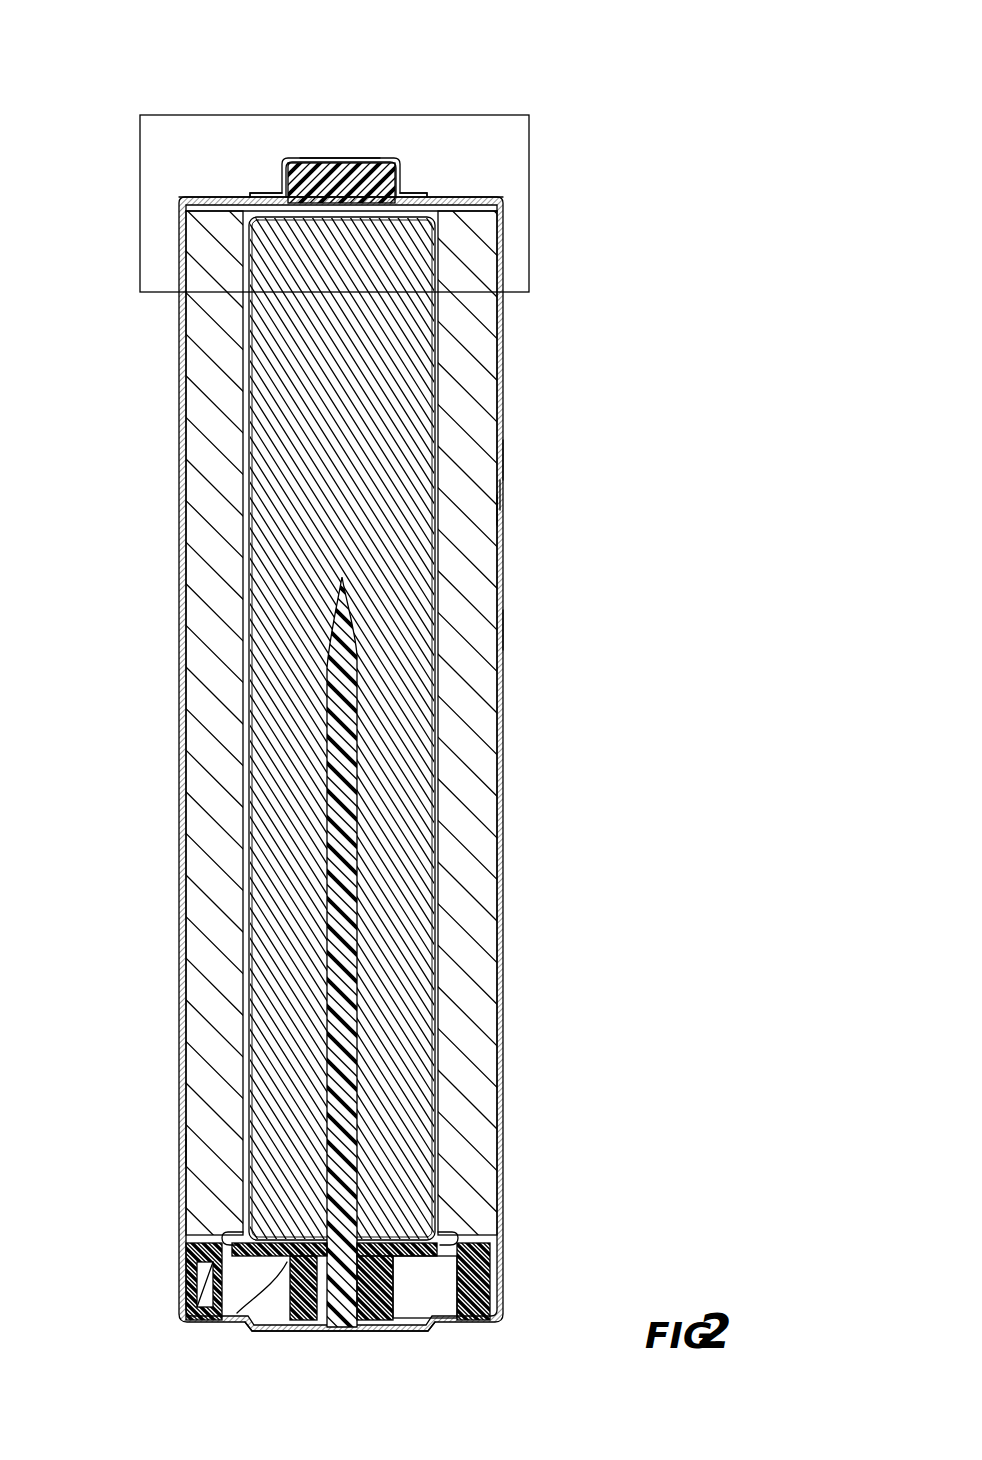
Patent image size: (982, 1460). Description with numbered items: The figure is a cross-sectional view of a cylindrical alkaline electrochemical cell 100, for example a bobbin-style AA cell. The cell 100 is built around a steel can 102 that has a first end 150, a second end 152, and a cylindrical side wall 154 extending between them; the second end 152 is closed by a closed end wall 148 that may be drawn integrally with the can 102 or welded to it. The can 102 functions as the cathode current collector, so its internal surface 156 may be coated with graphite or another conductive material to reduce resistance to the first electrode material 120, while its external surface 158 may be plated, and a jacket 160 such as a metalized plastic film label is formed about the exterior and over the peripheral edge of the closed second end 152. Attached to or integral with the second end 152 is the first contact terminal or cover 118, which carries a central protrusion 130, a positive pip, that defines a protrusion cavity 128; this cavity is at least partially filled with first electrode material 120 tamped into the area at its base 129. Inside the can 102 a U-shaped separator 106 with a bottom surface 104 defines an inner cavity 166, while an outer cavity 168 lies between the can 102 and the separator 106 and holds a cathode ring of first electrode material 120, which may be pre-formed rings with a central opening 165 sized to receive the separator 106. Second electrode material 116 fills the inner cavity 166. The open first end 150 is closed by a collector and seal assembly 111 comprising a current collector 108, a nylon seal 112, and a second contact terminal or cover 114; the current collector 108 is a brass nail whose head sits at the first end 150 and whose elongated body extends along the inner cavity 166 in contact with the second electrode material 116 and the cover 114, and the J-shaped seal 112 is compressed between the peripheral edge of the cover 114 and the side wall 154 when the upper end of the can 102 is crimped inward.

The electrochemical cell 100 is at (116, 118).
The can 102 is at (180, 1017).
The bottom surface 104 is at (403, 188).
The separator 106 is at (440, 327).
The current collector 108 is at (330, 1160).
The collector and seal assembly 111 is at (410, 1300).
The seal 112 is at (235, 1315).
The second contact terminal or cover 114 is at (323, 1343).
The second electrode material 116 is at (272, 892).
The first contact terminal or cover 118 is at (340, 158).
The first electrode material 120 is at (210, 555).
The protrusion cavity 128 is at (385, 160).
The base of the protrusion cavity 129 is at (256, 188).
The protrusion 130 is at (324, 158).
The closed end wall 148 is at (287, 207).
The first end 150 is at (387, 1349).
The second end 152 is at (298, 55).
The cylindrical side wall 154 is at (503, 460).
The internal surface 156 is at (490, 508).
The external surface 158 is at (515, 497).
The jacket 160 is at (503, 628).
The central opening 165 is at (497, 1248).
The inner cavity 166 is at (263, 1170).
The outer cavity 168 is at (188, 1150).